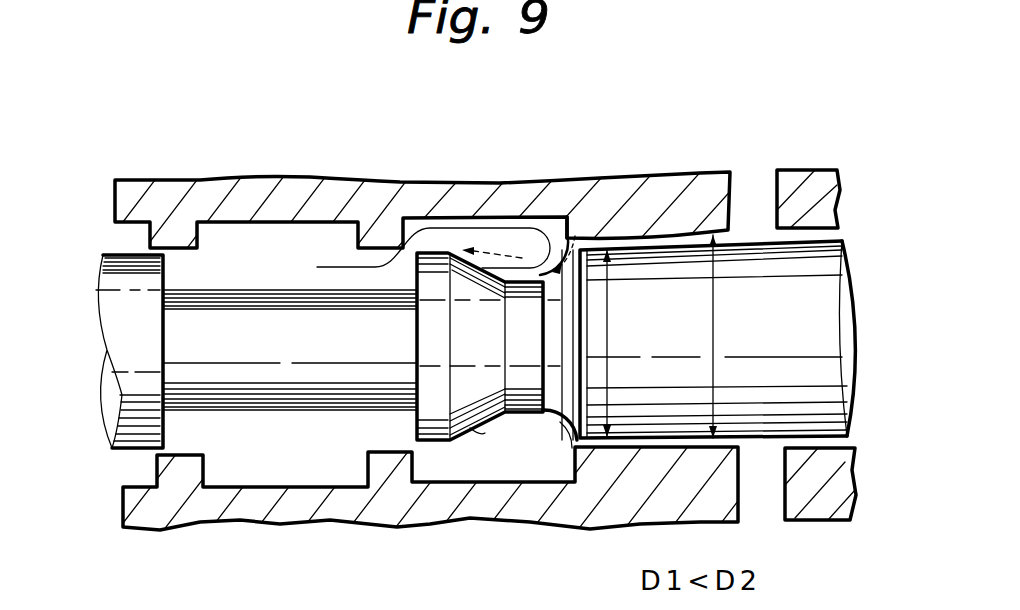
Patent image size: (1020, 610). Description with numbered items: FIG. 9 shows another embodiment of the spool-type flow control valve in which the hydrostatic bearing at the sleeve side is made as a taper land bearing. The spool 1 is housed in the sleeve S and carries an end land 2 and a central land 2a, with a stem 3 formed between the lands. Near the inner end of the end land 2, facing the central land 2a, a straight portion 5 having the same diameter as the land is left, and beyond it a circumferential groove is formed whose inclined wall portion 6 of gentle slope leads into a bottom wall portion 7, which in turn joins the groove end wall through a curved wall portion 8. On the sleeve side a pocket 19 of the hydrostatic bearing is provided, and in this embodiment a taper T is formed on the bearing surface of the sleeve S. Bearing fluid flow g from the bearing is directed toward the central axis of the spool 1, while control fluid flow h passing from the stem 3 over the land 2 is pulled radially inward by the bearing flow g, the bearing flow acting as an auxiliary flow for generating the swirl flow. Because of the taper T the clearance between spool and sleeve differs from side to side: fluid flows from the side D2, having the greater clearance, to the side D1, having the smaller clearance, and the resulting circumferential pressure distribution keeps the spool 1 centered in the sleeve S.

The spool 1 is at (860, 315).
The end land 2 is at (832, 273).
The central land 2a is at (128, 290).
The stem 3 is at (337, 363).
The straight portion 5 is at (447, 443).
The inclined wall portion 6 is at (485, 433).
The bottom wall portion 7 is at (533, 417).
The curved wall portion 8 is at (557, 427).
The pocket of a hydrostatic bearing 19 is at (765, 460).
The sleeve S is at (336, 190).
The taper T is at (650, 213).
The control fluid flow h is at (462, 218).
The bearing fluid flow g is at (553, 217).
The side having a smaller clearance D1 is at (596, 343).
The side having a greater clearance D2 is at (698, 336).